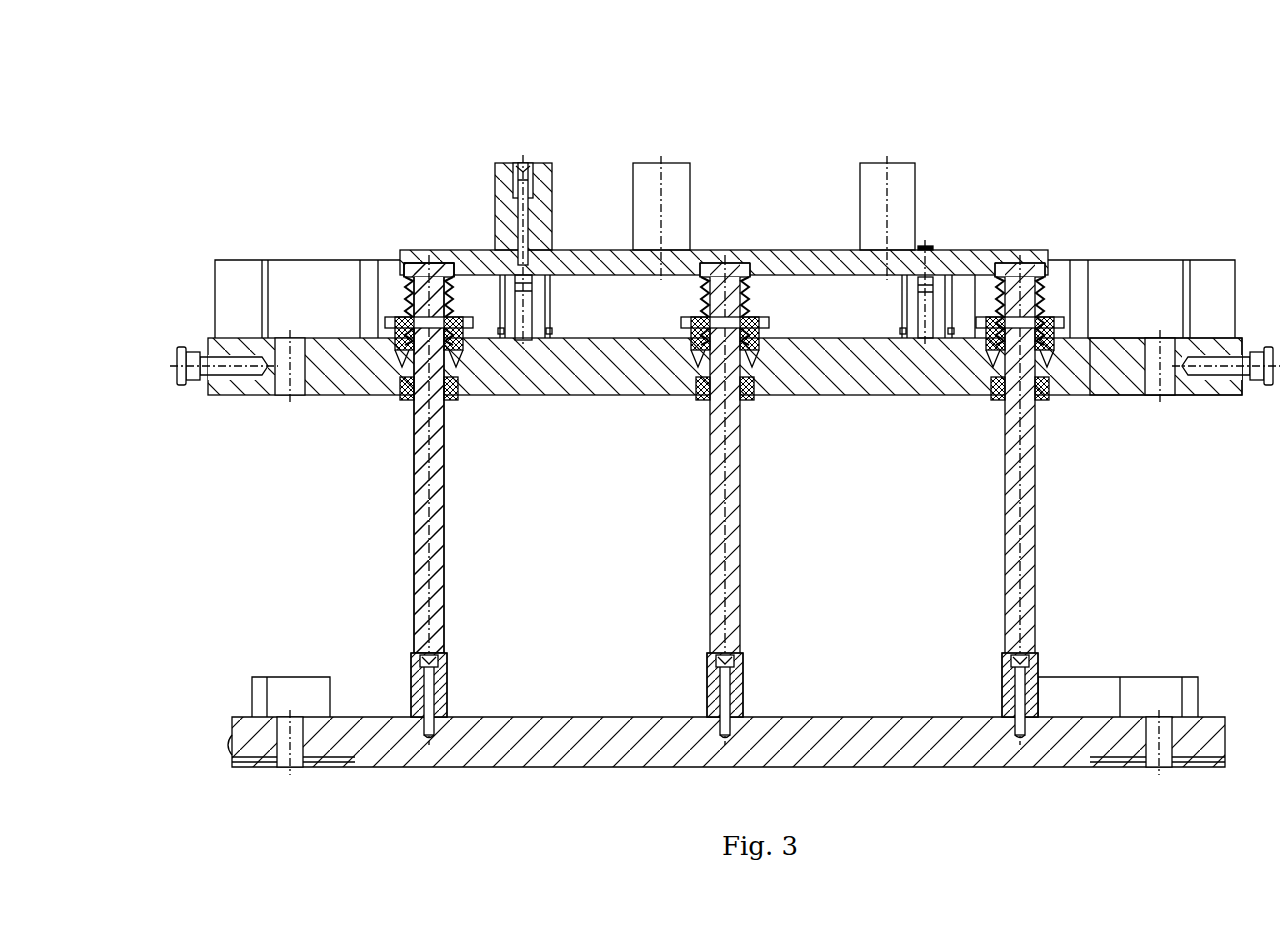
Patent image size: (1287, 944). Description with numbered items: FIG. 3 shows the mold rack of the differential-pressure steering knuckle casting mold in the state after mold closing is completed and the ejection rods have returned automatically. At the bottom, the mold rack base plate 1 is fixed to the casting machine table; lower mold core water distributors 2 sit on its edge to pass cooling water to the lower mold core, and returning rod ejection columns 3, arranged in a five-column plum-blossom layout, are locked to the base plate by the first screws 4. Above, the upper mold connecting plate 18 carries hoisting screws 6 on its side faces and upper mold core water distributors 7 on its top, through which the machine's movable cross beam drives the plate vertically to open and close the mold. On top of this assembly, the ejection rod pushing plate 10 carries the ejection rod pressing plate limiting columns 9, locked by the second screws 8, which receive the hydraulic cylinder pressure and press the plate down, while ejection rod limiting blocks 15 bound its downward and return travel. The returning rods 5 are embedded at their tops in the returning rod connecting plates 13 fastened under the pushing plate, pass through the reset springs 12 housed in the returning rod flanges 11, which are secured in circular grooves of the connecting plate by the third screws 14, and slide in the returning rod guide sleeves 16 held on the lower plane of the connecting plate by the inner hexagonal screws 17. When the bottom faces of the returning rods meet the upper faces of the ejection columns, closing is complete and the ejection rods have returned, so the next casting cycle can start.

The mold rack base plate 1 is at (333, 733).
The lower mold core water distributors 2 is at (337, 706).
The returning rod ejection columns 3 is at (417, 700).
The M12×95 inner hexagonal screws 4 is at (416, 660).
The returning rods 5 is at (418, 622).
The hoisting screws 6 is at (186, 352).
The upper mold core water distributors 7 is at (315, 293).
The M16×110 inner hexagonal screws 8 is at (522, 165).
The ejection rod pressing plate limiting columns 9 is at (548, 175).
The ejection rod pushing plate 10 is at (567, 258).
The returning rod flanges 11 is at (687, 318).
The reset springs 12 is at (710, 283).
The returning rod connecting plates 13 is at (740, 280).
The M8×20 inner hexagonal screws 14 is at (765, 337).
The ejection rod limiting blocks 15 is at (930, 302).
The returning rod guide sleeves 16 is at (1048, 345).
The M8×25 inner hexagonal screws 17 is at (1063, 347).
The upper mold connecting plate 18 is at (1098, 347).